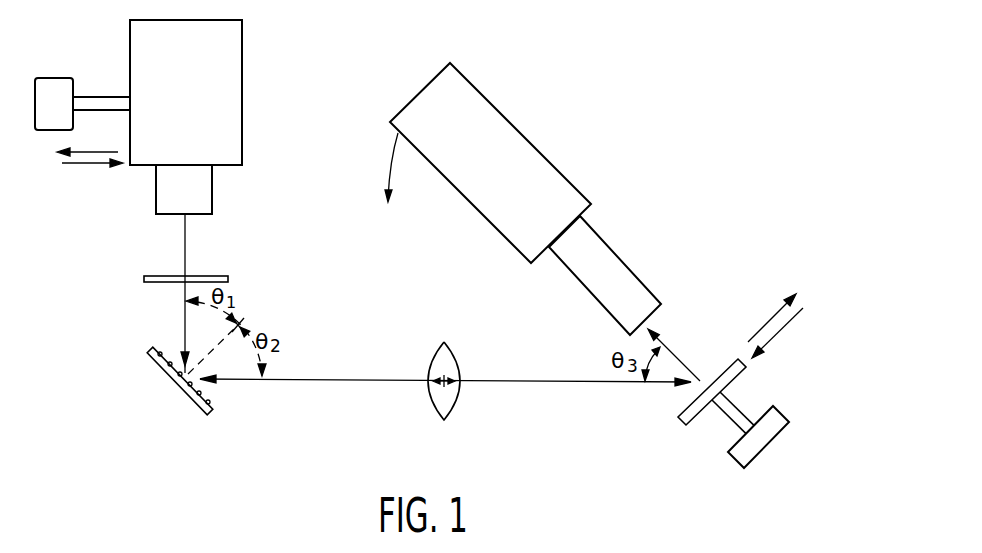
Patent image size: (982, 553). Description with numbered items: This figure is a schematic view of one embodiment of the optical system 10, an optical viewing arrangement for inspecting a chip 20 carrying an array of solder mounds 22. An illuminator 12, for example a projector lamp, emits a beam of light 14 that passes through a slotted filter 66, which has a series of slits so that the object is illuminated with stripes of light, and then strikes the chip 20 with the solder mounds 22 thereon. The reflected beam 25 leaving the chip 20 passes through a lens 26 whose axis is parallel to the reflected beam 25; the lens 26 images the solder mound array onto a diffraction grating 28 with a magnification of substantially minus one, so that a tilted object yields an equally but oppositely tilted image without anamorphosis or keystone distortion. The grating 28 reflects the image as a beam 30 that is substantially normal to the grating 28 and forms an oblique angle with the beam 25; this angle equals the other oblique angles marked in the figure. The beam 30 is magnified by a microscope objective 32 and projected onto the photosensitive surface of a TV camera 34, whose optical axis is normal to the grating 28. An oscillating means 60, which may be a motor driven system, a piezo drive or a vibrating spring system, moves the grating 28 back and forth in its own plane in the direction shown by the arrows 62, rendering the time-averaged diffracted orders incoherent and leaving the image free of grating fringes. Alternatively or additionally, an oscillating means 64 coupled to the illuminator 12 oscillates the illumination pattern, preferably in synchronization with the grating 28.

The optical system 10 is at (320, 97).
The illuminator 12 is at (242, 40).
The beam of light 14 is at (185, 245).
The chip 20 is at (181, 394).
The solder mounds 22 is at (215, 402).
The reflected beam 25 is at (335, 379).
The lens 26 is at (458, 410).
The diffraction grating 28 is at (680, 419).
The reflected beam 30 is at (679, 360).
The microscope objective 32 is at (603, 240).
The TV camera 34 is at (492, 105).
The oscillating means 60 is at (735, 462).
The arrows 62 is at (775, 298).
The oscillating means 64 is at (56, 78).
The slotted filter 66 is at (144, 282).